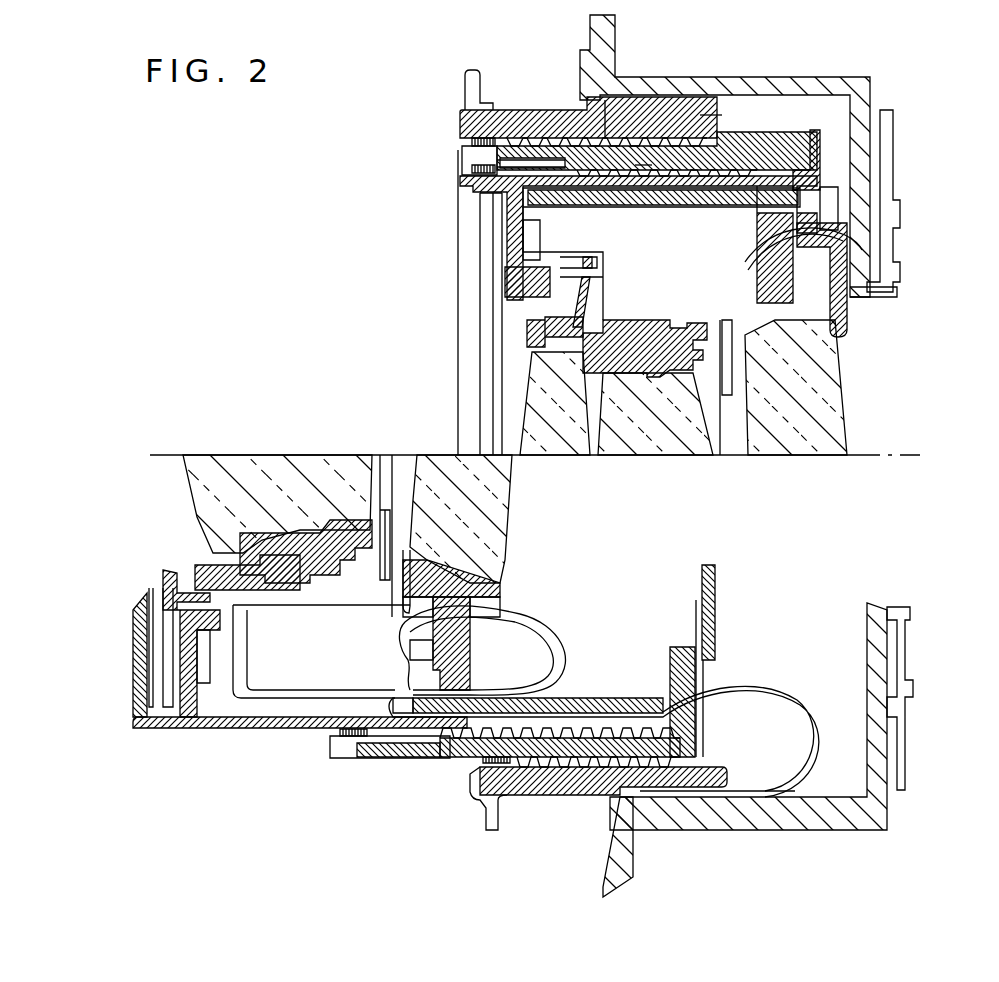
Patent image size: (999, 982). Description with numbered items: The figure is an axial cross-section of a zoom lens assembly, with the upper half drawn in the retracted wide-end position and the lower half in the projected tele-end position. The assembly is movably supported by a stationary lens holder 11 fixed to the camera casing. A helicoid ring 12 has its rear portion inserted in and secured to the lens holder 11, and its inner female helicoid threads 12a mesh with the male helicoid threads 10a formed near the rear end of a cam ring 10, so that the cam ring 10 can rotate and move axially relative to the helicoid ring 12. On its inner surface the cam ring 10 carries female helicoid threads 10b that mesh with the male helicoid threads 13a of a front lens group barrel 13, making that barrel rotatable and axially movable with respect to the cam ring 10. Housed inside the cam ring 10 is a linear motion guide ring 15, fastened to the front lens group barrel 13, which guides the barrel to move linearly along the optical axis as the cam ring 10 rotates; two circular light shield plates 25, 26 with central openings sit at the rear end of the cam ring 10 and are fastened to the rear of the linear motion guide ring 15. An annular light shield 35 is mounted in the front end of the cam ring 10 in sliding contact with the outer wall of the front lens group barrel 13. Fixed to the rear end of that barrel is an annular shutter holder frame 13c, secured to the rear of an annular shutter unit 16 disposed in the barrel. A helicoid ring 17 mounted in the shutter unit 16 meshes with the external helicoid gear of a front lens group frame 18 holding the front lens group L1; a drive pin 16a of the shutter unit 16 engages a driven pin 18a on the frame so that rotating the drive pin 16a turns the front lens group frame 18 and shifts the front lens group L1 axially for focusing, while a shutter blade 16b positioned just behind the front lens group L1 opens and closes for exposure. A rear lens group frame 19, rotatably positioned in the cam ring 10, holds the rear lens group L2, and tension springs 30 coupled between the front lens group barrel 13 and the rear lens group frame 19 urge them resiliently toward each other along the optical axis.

The cam ring 10 is at (753, 152).
The male helicoid threads 10a is at (703, 113).
The female helicoid threads 10b is at (640, 165).
The stationary lens holder 11 is at (867, 80).
The helicoid ring 12 is at (535, 118).
The female helicoid threads 12a is at (613, 148).
The front lens group barrel 13 is at (480, 182).
The male helicoid threads 13a is at (820, 190).
The shutter holder frame 13c is at (845, 312).
The linear motion guide ring 15 is at (687, 207).
The shutter unit 16 is at (478, 302).
The drive pin 16a is at (560, 258).
The shutter blade 16b is at (388, 455).
The helicoid ring 17 is at (533, 357).
The front lens group frame 18 is at (607, 455).
The driven pin 18a is at (517, 274).
The rear lens group frame 19 is at (785, 232).
The light shield plate 25 is at (824, 192).
The light shield plate 26 is at (840, 198).
The tension springs 30 is at (537, 640).
The annular light shield 35 is at (468, 148).
The front lens group L1 is at (260, 455).
The rear lens group L2 is at (452, 455).